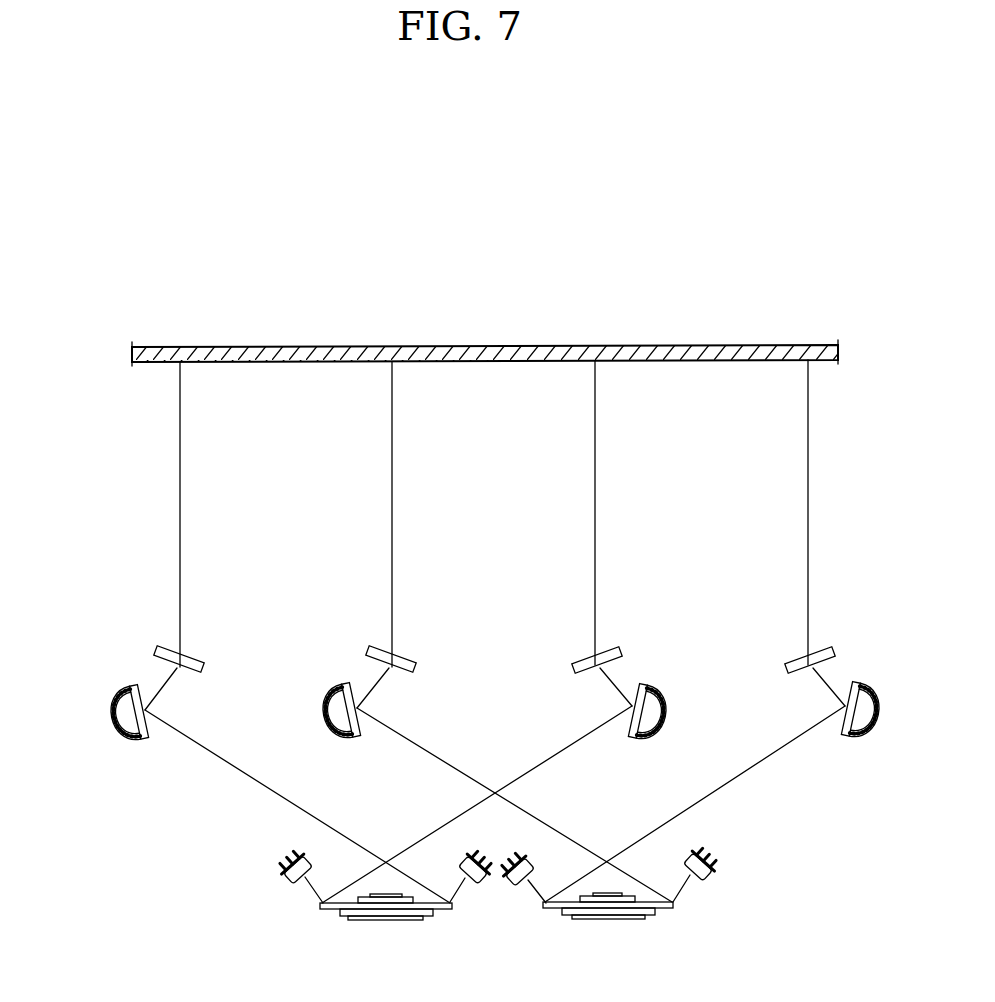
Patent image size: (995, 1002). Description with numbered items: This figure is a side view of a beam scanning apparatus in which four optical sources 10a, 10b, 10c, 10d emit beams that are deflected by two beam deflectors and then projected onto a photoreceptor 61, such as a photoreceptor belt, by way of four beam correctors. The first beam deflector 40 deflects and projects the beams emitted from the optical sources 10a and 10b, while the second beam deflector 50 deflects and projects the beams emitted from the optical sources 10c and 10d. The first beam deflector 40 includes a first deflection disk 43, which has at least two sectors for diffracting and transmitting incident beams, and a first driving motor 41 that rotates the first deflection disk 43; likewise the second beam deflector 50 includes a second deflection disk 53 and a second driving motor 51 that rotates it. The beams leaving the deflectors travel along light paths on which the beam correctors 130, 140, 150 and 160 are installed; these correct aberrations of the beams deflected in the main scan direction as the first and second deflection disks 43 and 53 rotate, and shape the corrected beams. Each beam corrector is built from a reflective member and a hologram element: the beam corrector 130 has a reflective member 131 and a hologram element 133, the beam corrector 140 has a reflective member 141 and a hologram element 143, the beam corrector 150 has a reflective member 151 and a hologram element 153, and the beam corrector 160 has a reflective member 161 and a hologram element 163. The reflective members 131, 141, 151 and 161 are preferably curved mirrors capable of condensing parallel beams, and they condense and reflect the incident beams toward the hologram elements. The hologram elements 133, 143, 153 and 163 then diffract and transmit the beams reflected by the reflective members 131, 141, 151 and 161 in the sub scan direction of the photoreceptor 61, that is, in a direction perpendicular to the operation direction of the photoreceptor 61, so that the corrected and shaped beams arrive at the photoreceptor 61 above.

The photoreceptor 61 is at (236, 347).
The beam corrector 130 is at (236, 743).
The reflective member 131 is at (108, 718).
The hologram element 133 is at (157, 648).
The beam corrector 140 is at (452, 742).
The reflective member 141 is at (320, 718).
The hologram element 143 is at (368, 648).
The beam corrector 150 is at (523, 743).
The reflective member 151 is at (668, 716).
The hologram element 153 is at (615, 648).
The beam corrector 160 is at (714, 742).
The reflective member 161 is at (848, 735).
The hologram element 163 is at (830, 648).
The optical source 10a is at (286, 858).
The optical source 10b is at (476, 886).
The optical source 10c is at (522, 887).
The optical source 10d is at (716, 858).
The first beam deflector 40 is at (342, 948).
The first driving motor 41 is at (388, 922).
The first deflection disk 43 is at (322, 907).
The second beam deflector 50 is at (653, 944).
The second driving motor 51 is at (612, 921).
The second deflection disk 53 is at (672, 906).